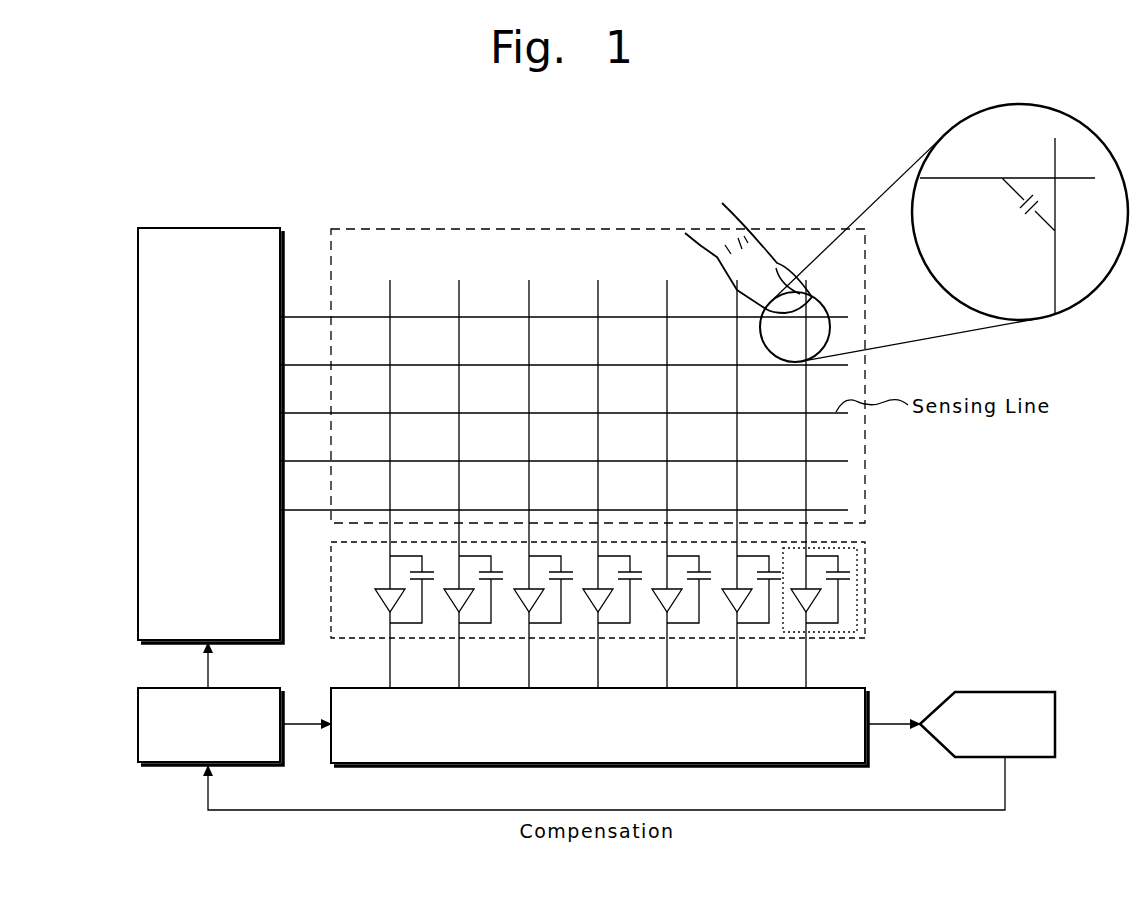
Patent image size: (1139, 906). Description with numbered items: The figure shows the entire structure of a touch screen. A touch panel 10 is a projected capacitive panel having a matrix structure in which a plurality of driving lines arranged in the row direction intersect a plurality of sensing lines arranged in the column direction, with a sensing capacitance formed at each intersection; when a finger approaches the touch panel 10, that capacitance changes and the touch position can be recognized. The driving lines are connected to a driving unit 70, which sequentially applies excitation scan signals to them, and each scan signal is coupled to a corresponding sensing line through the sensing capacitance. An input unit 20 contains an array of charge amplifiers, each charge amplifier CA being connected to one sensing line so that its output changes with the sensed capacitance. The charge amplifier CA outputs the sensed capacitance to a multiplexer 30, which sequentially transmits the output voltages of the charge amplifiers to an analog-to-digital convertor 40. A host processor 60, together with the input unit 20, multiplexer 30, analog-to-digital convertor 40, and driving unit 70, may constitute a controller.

The touch panel 10 is at (866, 478).
The input unit 20 is at (866, 568).
The multiplexer (MUX) 30 is at (869, 748).
The analog-to-digital convertor (ADC) 40 is at (1023, 692).
The host processor 60 is at (138, 720).
The driving unit 70 is at (138, 310).
The charge amplifier CA is at (858, 605).